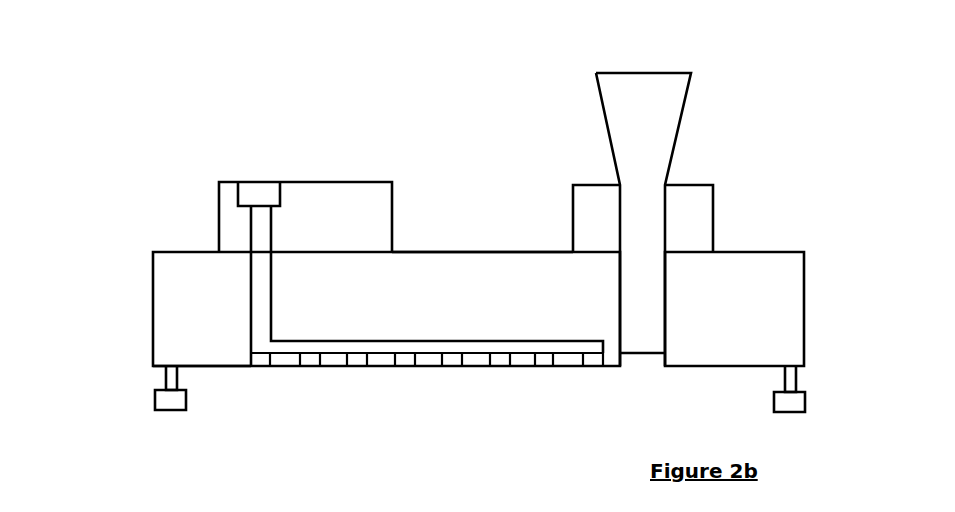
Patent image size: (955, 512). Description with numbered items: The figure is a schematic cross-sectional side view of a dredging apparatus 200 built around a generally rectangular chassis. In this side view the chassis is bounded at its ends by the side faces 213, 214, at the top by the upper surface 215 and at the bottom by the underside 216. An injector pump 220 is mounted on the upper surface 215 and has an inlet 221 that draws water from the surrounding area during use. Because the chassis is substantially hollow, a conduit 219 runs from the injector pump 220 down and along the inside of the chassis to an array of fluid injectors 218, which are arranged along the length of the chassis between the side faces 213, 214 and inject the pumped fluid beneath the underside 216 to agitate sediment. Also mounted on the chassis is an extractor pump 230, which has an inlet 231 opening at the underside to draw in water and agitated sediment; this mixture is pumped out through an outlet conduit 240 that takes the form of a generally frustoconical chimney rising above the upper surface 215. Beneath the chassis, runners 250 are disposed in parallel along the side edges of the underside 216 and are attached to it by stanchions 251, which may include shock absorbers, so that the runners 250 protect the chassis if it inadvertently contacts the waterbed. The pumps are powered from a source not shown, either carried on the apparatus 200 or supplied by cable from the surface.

The dredging apparatus 200 is at (230, 150).
The side face 213 is at (153, 341).
The side face 214 is at (800, 280).
The upper surface 215 is at (484, 252).
The underside 216 is at (225, 366).
The fluid injectors 218 is at (385, 367).
The conduit 219 is at (272, 296).
The injector pump 220 is at (348, 207).
The inlet 221 is at (258, 195).
The extractor pump 230 is at (695, 213).
The inlet 231 is at (642, 353).
The conduit 240 is at (662, 98).
The runners 250 is at (810, 450).
The stanchions 251 is at (833, 395).